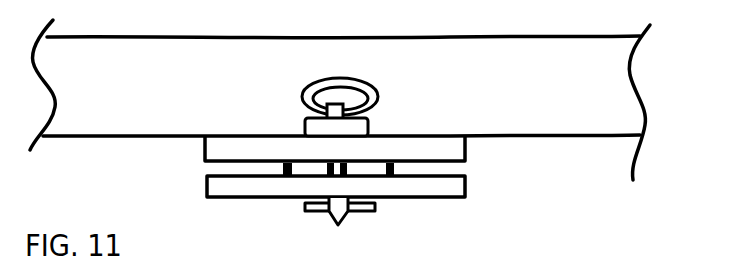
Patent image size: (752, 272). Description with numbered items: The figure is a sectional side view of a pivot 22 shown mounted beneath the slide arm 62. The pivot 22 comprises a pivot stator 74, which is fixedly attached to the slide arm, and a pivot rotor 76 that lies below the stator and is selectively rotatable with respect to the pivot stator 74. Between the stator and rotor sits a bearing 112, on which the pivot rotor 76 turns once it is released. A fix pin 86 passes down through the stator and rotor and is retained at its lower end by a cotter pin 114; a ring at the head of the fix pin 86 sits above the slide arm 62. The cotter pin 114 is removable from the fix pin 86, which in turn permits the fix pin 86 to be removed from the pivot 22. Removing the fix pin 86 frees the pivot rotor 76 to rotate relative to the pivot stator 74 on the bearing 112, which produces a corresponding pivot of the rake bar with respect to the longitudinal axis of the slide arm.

The alternate slide arm 62 is at (193, 66).
The fix pin 86 is at (372, 93).
The pivot 22 is at (176, 166).
The pivot stator 74 is at (448, 148).
The pivot rotor 76 is at (447, 183).
The bearing 112 is at (305, 168).
The cotter pin 114 is at (365, 207).